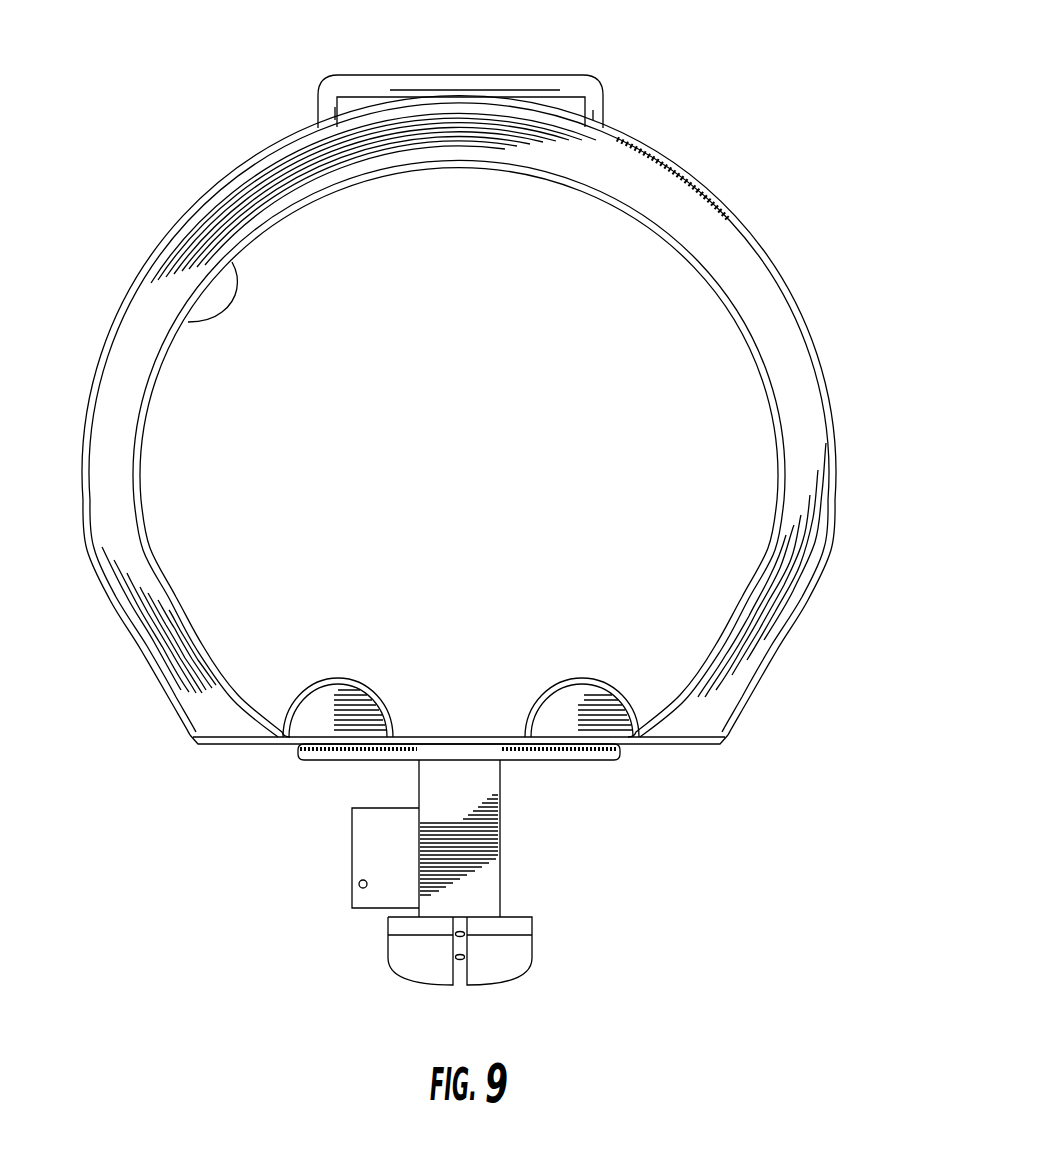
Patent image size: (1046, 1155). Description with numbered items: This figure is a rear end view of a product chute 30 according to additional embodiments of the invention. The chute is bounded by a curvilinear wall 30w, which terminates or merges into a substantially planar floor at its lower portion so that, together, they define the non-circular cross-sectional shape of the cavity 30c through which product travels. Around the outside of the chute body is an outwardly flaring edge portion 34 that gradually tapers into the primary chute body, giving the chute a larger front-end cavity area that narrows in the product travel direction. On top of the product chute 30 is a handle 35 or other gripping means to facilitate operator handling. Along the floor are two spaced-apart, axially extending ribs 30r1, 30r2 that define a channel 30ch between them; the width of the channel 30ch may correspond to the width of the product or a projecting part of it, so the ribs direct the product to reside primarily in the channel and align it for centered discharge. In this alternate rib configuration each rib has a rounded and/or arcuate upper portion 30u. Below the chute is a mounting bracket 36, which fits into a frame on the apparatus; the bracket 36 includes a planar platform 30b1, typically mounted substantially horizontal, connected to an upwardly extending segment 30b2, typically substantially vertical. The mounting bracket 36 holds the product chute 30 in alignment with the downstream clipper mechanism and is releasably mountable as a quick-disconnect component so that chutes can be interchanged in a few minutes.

The product chute 30 is at (708, 160).
The cavity 30c is at (592, 434).
The outwardly flaring edge portion 34 is at (780, 317).
The handle 35 is at (505, 82).
The curvilinear wall 30w is at (232, 262).
The rounded upper portion 30u is at (347, 677).
The first rib 30r1 is at (322, 717).
The second rib 30r2 is at (567, 715).
The channel 30ch is at (447, 720).
The planar platform 30b1 is at (555, 762).
The upwardly extending segment 30b2 is at (492, 902).
The mounting bracket 36 is at (494, 885).